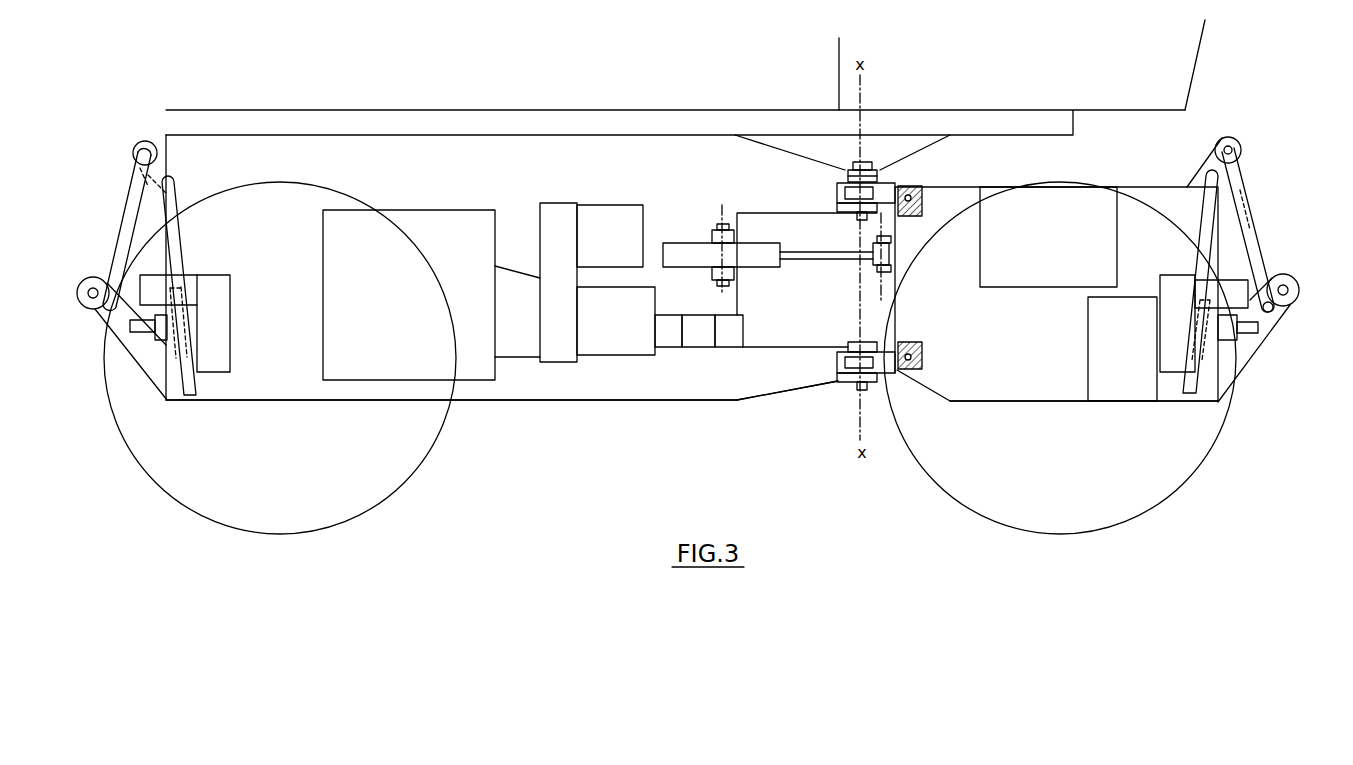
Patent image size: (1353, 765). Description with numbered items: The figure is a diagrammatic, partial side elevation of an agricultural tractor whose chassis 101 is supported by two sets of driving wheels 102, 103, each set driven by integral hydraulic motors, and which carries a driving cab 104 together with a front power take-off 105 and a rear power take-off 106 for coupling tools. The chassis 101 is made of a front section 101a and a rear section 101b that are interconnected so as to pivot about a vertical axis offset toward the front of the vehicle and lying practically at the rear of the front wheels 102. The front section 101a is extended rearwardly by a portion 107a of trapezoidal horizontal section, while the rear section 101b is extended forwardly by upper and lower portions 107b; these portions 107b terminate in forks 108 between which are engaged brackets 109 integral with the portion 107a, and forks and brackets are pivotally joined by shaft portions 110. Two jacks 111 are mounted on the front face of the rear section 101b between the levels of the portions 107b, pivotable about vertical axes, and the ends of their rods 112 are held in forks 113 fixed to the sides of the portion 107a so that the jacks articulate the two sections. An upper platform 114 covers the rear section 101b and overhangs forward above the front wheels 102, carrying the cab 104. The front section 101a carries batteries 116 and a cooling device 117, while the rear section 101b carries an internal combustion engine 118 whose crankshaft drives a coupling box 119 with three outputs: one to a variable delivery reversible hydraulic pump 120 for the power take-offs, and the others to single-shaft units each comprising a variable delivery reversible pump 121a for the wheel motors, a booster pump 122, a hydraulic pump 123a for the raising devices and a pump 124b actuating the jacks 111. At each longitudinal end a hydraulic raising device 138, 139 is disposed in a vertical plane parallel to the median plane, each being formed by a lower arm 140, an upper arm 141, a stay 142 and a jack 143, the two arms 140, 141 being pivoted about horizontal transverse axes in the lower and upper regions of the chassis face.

The chassis 101 is at (466, 133).
The front section 101a is at (1020, 402).
The rear section 101b is at (577, 402).
The front driving wheels 102 is at (1240, 403).
The rear driving wheels 103 is at (143, 472).
The driving cab 104 is at (1205, 34).
The front power take-off 105 is at (1249, 287).
The rear power take-off 106 is at (205, 270).
The rearward portion 107a is at (905, 378).
The forward portions 107b is at (783, 152).
The forks 108 is at (847, 170).
The brackets 109 is at (863, 181).
The shaft portions 110 is at (852, 391).
The jacks 111 is at (753, 253).
The rods 112 is at (806, 260).
The forks 113 is at (876, 263).
The upper platform 114 is at (637, 108).
The batteries 116 is at (1101, 356).
The cooling device 117 is at (1018, 254).
The internal combustion engine 118 is at (363, 294).
The coupling box 119 is at (544, 284).
The variable delivery and reversible hydraulic pump 120 is at (579, 247).
The variable delivery and reversible hydraulic pump 121a is at (586, 334).
The booster pump 122 is at (668, 336).
The hydraulic pump 123a is at (697, 338).
The pump 124b is at (728, 338).
The hydraulic raising device 138 is at (1254, 193).
The hydraulic raising device 139 is at (118, 220).
The lower arm 140 is at (1235, 138).
The upper arm 141 is at (1266, 326).
The stay 142 is at (1248, 231).
The jack 143 is at (1190, 378).